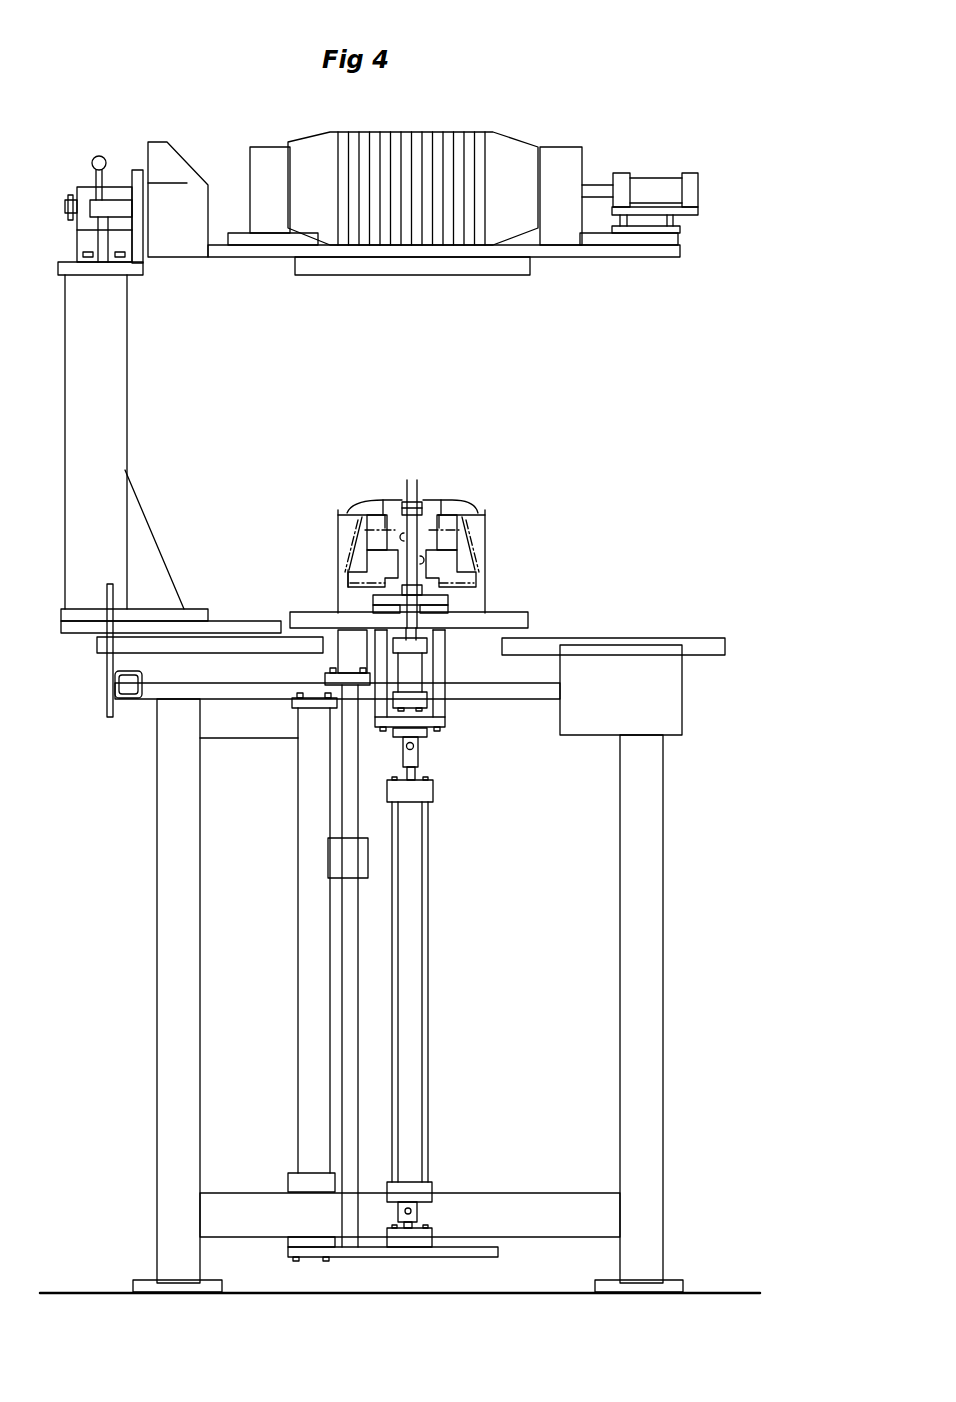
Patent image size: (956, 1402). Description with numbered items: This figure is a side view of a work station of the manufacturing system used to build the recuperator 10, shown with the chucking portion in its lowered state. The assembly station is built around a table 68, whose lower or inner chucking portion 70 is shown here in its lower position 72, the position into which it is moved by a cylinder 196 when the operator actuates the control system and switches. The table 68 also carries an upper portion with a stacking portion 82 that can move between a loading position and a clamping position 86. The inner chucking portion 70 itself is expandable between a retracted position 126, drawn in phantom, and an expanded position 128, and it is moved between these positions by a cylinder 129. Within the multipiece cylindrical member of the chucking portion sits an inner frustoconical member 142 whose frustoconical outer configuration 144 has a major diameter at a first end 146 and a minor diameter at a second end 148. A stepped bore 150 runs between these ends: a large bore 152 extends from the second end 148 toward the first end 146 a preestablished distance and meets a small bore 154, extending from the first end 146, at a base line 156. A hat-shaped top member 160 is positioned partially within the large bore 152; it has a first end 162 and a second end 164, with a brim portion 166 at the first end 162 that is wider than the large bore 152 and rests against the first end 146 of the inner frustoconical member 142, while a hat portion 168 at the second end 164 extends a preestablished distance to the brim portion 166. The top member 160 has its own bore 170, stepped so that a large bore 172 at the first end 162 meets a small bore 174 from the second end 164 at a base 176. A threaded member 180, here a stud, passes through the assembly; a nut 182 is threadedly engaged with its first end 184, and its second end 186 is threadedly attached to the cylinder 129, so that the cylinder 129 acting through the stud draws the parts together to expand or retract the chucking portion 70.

The recuperator 10 is at (510, 138).
The table 68 is at (107, 705).
The lower or inner chucking portion 70 is at (530, 617).
The lower position 72 is at (700, 577).
The stacking portion 82 is at (558, 147).
The clamping position 86 is at (268, 142).
The retracted position 126 is at (470, 500).
The expanded position 128 is at (468, 520).
The cylinder 129 is at (428, 676).
The inner frustoconical member 142 is at (459, 505).
The frustoconical outer configuration 144 is at (458, 532).
The first end 146 is at (456, 588).
The second end 148 is at (446, 506).
The stepped bore 150 is at (421, 497).
The large bore 152 is at (368, 505).
The small bore 154 is at (375, 578).
The base line 156 is at (390, 550).
The top member 160 is at (353, 512).
The first end 162 is at (358, 510).
The second end 164 is at (432, 560).
The brim portion 166 is at (350, 505).
The hat portion 168 is at (440, 545).
The bore 170 is at (410, 537).
The large bore 172 is at (412, 480).
The small bore 174 is at (350, 511).
The base 176 is at (376, 500).
The threaded member 180 is at (428, 640).
The nut 182 is at (386, 497).
The first end 184 is at (398, 497).
The second end 186 is at (412, 620).
The cylinder 196 is at (428, 940).